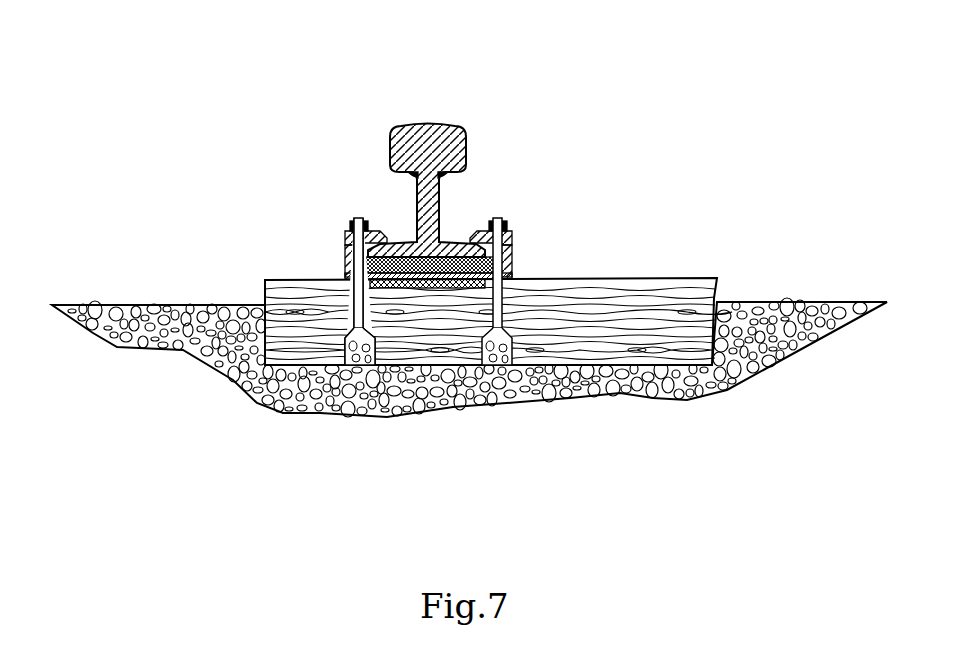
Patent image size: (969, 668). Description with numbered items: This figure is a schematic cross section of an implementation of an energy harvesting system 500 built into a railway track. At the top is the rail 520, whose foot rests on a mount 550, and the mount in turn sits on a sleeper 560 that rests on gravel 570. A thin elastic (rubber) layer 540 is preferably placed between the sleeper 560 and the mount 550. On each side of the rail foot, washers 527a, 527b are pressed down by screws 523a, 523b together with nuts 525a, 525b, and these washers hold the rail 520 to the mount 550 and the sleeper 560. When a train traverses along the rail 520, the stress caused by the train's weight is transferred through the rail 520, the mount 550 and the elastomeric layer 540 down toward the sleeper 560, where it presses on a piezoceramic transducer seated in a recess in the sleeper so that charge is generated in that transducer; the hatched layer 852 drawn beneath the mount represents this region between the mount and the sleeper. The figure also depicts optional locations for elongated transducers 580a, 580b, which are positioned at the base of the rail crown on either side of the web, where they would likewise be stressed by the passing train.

The rail fastening assembly 500 is at (453, 97).
The rail 520 is at (412, 128).
The screw 523a is at (512, 250).
The screw 523b is at (343, 262).
The nut 525a is at (505, 220).
The nut 525b is at (356, 221).
The washer 527a is at (510, 228).
The washer 527b is at (345, 233).
The thin elastic layer 540 is at (512, 275).
The mount 550 is at (458, 286).
The sleeper 560 is at (690, 278).
The gravel 570 is at (720, 388).
The elongated transducer 580a is at (466, 175).
The elongated transducer 580b is at (400, 176).
The abrasion pad 852 is at (425, 287).